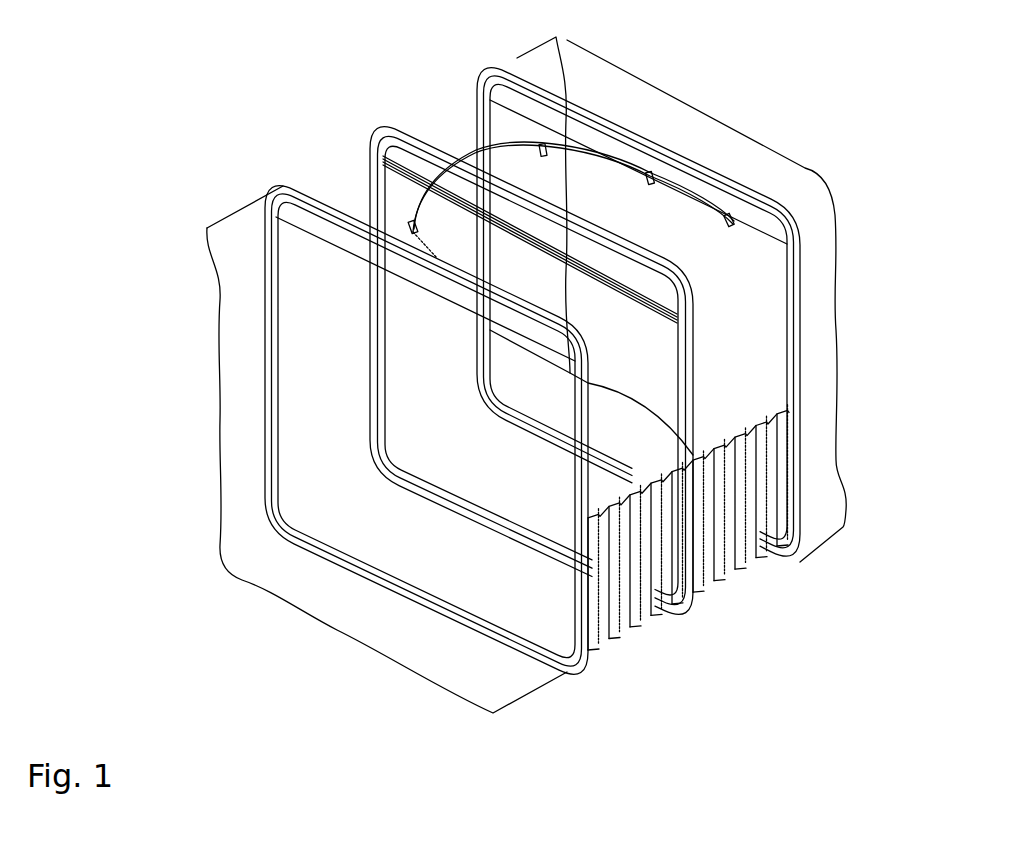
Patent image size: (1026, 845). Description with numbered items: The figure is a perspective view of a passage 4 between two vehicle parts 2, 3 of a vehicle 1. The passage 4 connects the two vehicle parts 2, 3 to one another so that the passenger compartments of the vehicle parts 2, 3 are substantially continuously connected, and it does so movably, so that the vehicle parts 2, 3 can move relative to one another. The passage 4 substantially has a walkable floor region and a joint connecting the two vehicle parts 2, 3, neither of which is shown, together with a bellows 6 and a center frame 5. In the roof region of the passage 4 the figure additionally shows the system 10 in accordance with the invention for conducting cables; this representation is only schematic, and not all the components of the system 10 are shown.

The vehicle 1 is at (200, 108).
The vehicle part 2 is at (775, 200).
The vehicle part 3 is at (205, 232).
The passage 4 is at (700, 632).
The center frame 5 is at (340, 134).
The bellows 6 is at (718, 582).
The system for conducting cables 10 is at (468, 145).